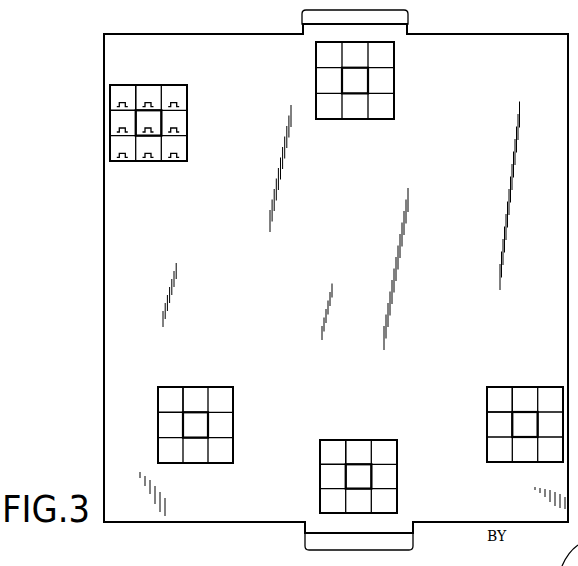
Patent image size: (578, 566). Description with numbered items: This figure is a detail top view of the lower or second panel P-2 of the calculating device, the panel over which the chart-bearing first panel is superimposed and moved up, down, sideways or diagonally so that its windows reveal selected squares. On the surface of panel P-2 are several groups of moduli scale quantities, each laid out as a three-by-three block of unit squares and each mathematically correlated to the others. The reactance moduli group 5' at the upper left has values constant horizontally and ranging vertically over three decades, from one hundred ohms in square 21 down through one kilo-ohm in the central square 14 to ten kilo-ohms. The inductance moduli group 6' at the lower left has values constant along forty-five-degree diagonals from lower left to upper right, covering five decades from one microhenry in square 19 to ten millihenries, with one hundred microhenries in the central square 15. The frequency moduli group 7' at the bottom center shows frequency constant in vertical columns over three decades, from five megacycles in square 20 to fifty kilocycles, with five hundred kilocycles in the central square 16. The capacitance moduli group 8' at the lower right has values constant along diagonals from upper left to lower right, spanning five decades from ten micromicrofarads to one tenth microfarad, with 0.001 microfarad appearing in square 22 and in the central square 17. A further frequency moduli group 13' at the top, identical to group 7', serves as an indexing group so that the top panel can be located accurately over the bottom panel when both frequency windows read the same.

The second panel P-2 is at (108, 262).
The reactance moduli group 5' is at (170, 132).
The reactance square (100 ohms) 21 is at (110, 97).
The reactance square (1 kilo-ohm) 14 is at (138, 120).
The indexing frequency moduli group 13' is at (381, 80).
The inductance moduli group 6' is at (215, 435).
The inductance square (1 microhenry) 19 is at (158, 396).
The inductance square (100 microhenries) 15 is at (185, 422).
The frequency moduli group 7' is at (355, 462).
The frequency square (5 megacycles) 20 is at (320, 450).
The frequency square (500 kilocycles) 16 is at (345, 470).
The capacitance moduli group 8' is at (506, 422).
The capacitance square (0.001 microfarad) 22 is at (487, 398).
The capacitance square (0.001 microfarad) 17 is at (515, 420).